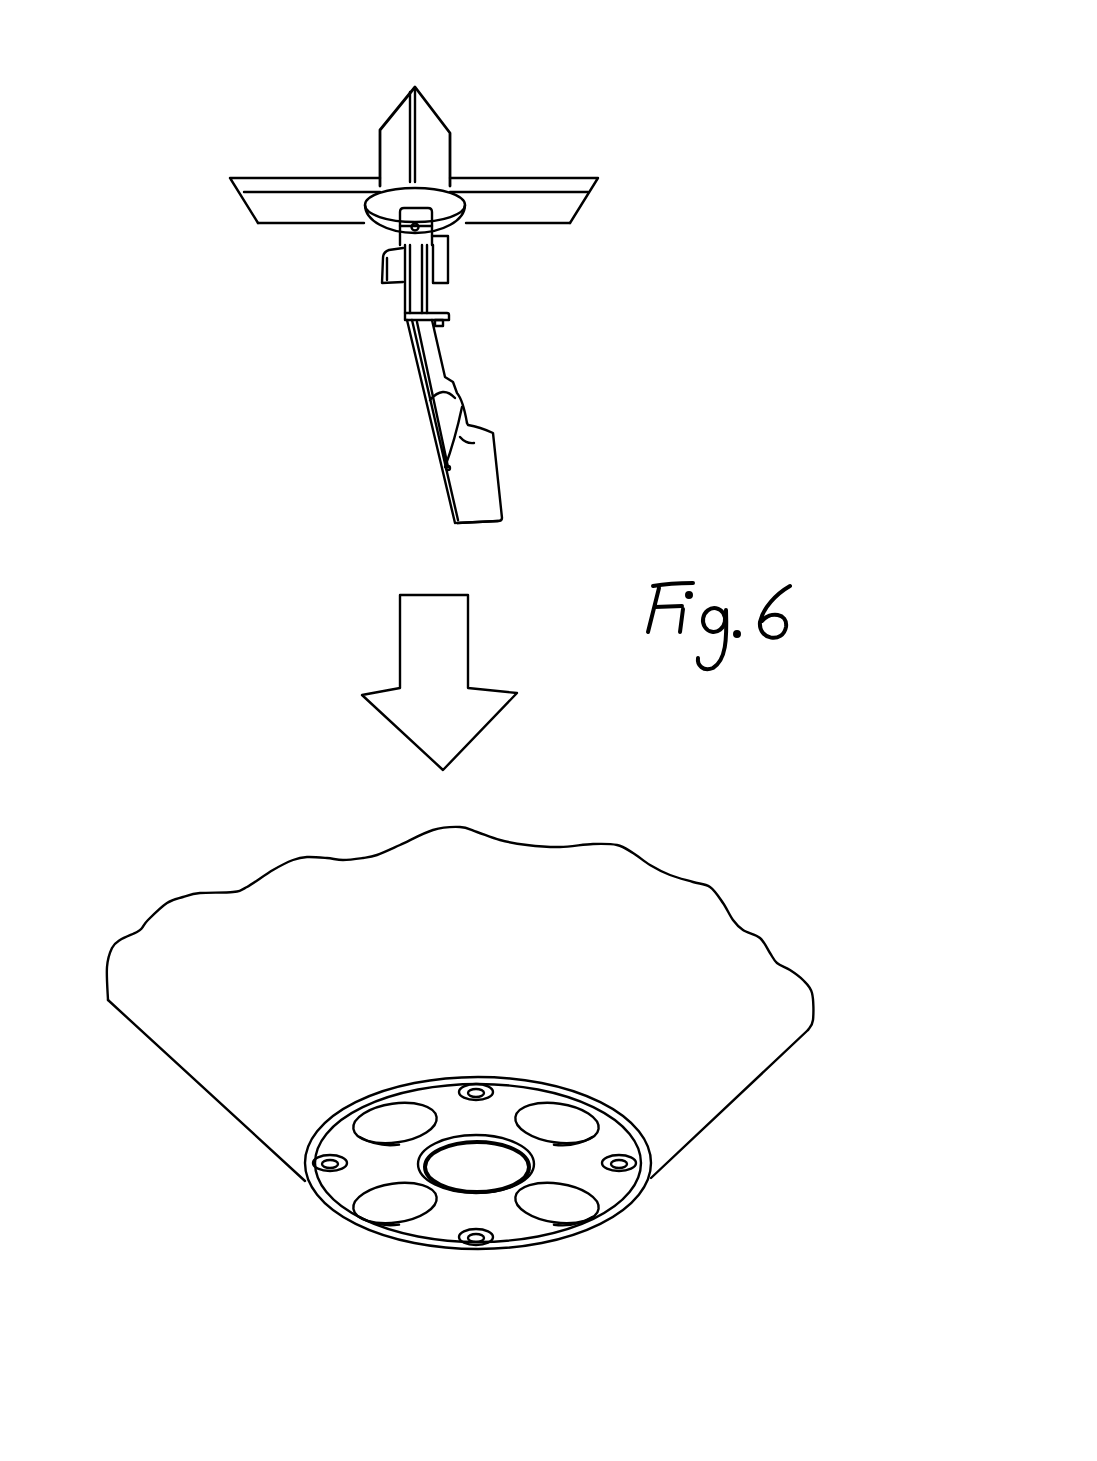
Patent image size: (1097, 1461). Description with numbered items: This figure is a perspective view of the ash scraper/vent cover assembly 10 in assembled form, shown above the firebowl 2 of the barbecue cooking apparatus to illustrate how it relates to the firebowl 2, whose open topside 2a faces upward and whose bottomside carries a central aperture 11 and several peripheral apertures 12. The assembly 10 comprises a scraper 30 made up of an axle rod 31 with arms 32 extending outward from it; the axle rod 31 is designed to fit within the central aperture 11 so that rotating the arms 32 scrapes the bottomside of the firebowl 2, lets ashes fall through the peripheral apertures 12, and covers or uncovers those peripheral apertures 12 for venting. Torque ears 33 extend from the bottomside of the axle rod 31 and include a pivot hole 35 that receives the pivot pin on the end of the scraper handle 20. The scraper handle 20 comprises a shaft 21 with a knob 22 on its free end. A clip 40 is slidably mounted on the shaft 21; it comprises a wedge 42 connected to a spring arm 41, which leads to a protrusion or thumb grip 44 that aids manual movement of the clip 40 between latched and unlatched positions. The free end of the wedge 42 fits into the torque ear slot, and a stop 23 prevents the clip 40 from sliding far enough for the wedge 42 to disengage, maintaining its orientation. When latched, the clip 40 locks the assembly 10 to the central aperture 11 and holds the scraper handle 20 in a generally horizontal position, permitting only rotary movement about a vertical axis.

The ash scraper/vent cover assembly 10 is at (553, 140).
The arm 32 is at (422, 112).
The axle rod 31 is at (375, 215).
The scraper 30 is at (453, 197).
The torque ears 33 is at (400, 222).
The pivot hole 35 is at (418, 228).
The protrusion or thumb grip 44 is at (390, 278).
The wedge 42 is at (438, 281).
The clip 40 is at (448, 317).
The stop 23 is at (441, 322).
The shaft 21 is at (408, 333).
The spring arm 41 is at (415, 352).
The scraper handle 20 is at (490, 473).
The knob 22 is at (473, 513).
The firebowl 2 is at (708, 1101).
The open topside 2a is at (658, 1162).
The central aperture 11 is at (469, 1179).
The peripheral aperture 12 is at (375, 1215).